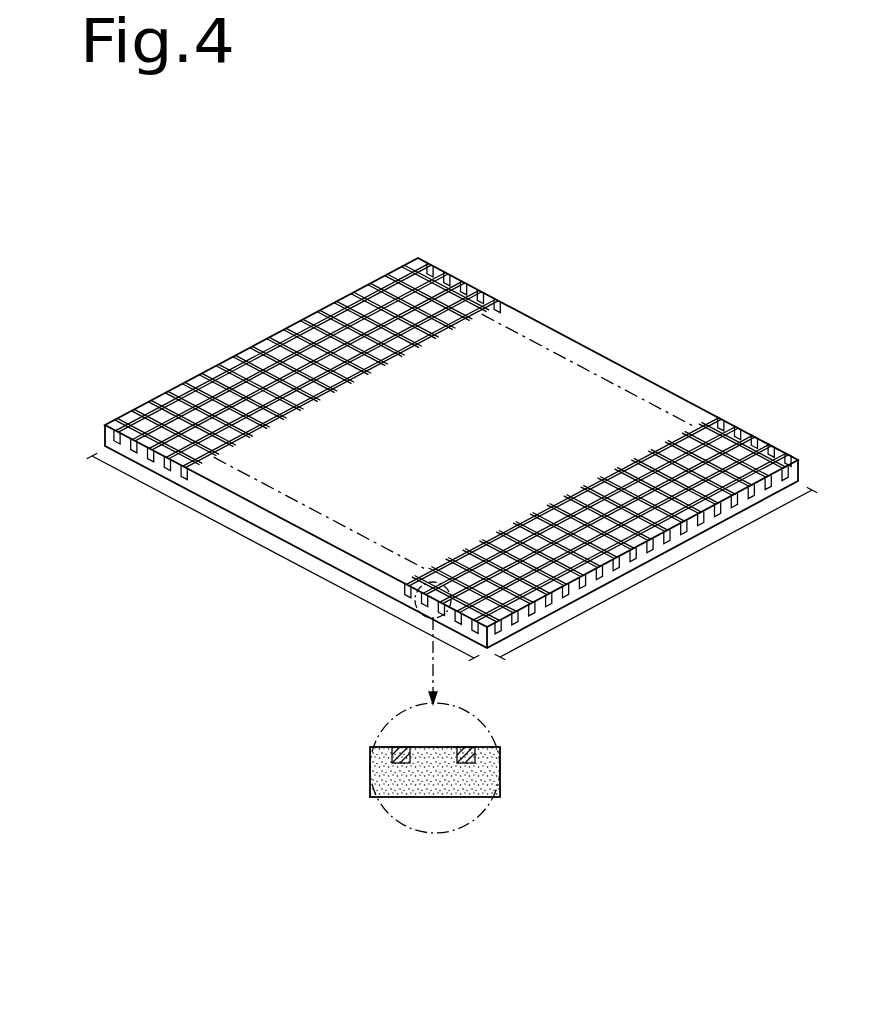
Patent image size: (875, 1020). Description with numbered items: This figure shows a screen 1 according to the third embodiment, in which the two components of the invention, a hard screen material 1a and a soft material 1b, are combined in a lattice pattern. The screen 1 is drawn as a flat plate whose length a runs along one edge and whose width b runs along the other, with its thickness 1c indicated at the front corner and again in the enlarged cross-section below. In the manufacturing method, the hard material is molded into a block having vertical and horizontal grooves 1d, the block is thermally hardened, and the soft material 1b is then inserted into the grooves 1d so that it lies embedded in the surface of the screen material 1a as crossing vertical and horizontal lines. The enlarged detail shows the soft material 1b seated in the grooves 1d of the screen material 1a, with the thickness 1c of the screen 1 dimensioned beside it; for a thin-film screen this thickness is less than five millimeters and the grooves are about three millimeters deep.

The screen 1 is at (409, 249).
The screen material 1a is at (494, 298).
The soft material 1b is at (240, 424).
The thickness 1c is at (487, 639).
The grooves 1d is at (403, 588).
The length a is at (656, 573).
The width b is at (283, 557).